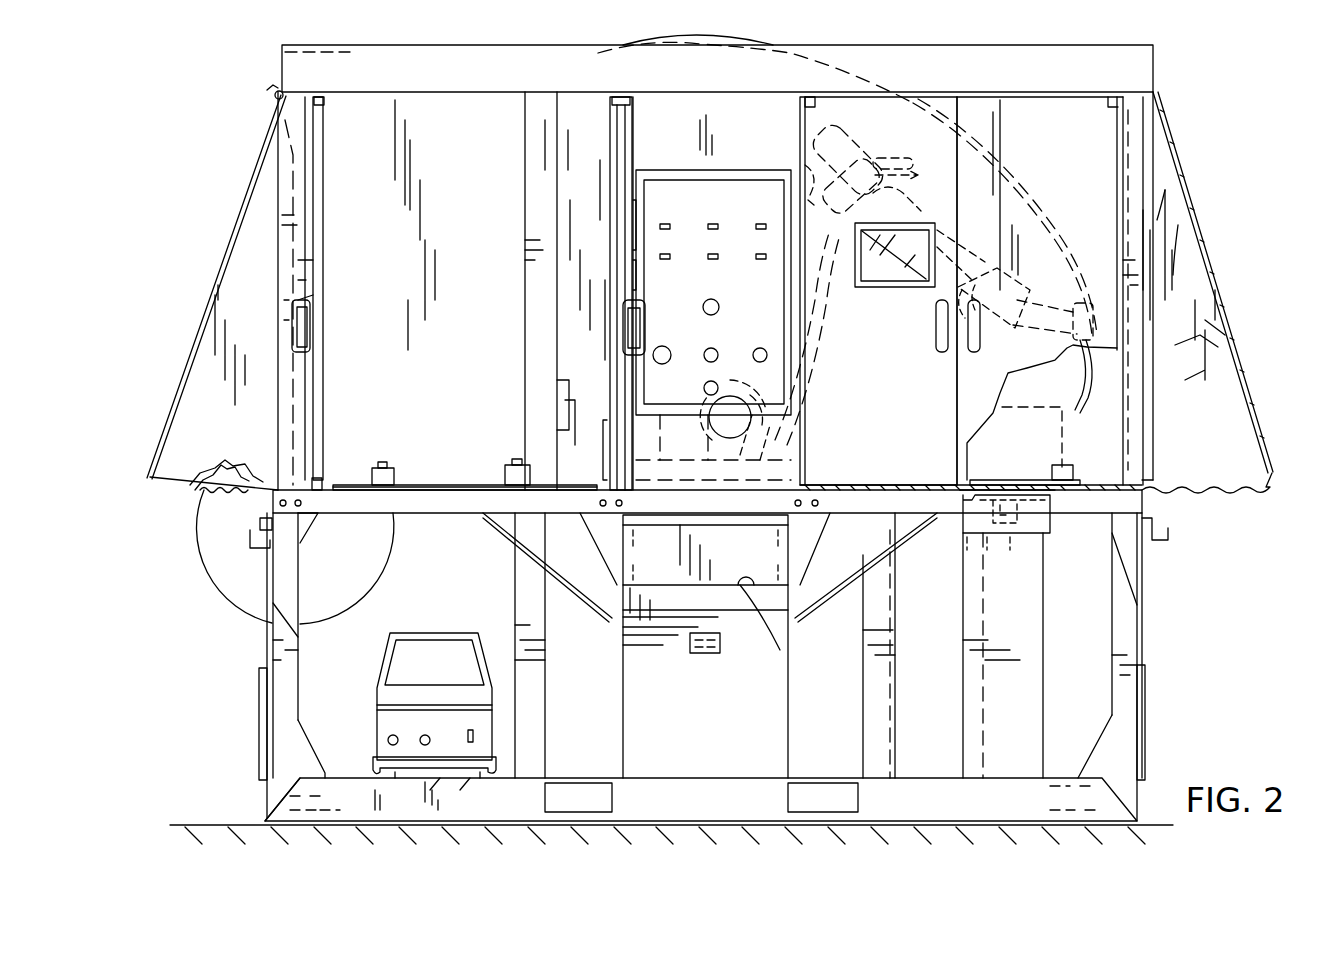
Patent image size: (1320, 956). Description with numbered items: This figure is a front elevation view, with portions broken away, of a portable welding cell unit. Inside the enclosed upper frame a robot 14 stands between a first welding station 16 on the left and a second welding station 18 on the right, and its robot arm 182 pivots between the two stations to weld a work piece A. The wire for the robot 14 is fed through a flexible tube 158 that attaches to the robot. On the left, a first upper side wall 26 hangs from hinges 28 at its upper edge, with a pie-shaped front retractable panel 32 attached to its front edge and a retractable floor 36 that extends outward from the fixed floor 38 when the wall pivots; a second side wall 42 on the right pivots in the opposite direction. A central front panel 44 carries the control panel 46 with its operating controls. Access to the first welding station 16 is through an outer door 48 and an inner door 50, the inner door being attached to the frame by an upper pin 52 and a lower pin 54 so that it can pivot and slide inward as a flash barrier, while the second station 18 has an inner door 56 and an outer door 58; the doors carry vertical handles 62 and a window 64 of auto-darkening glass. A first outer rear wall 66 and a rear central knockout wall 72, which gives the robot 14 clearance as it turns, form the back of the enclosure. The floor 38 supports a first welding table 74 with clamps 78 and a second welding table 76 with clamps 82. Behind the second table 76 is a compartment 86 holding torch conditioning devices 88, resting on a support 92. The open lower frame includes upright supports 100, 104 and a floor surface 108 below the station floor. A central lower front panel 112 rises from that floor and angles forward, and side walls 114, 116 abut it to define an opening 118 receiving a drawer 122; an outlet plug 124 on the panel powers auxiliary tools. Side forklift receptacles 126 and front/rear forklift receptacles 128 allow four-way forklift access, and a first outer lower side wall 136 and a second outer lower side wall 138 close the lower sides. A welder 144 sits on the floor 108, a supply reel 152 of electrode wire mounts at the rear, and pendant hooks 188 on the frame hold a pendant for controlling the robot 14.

The robot 14 is at (919, 195).
The first welding station 16 is at (362, 222).
The second welding station 18 is at (1113, 387).
The first upper side wall 26 is at (193, 337).
The hinges 28 is at (280, 90).
The front retractable panel 32 is at (195, 405).
The retractable floor 36 is at (212, 493).
The floor 38 is at (415, 488).
The second side wall 42 is at (1245, 400).
The central front panel 44 is at (750, 445).
The control panel 46 is at (725, 195).
The outer door 48 is at (322, 270).
The inner door 50 is at (620, 142).
The upper pin 52 is at (620, 95).
The lower pin 54 is at (612, 493).
The inner door 56 is at (910, 135).
The outer door 58 is at (1055, 125).
The handles 62 is at (297, 320).
The window 64 is at (640, 262).
The first outer rear wall 66 is at (465, 135).
The rear central knockout wall 72 is at (590, 110).
The first welding table 74 is at (455, 485).
The second welding table 76 is at (1085, 485).
The clamps 78 is at (375, 477).
The clamps 82 is at (1070, 465).
The compartment 86 is at (1050, 533).
The torch conditioning devices 88 is at (1013, 533).
The support 92 is at (1032, 628).
The upright support 100 is at (280, 696).
The upright support 104 is at (1128, 650).
The floor surface 108 is at (345, 778).
The central lower front panel 112 is at (640, 705).
The side wall 114 is at (633, 650).
The side wall 116 is at (775, 688).
The opening 118 is at (745, 585).
The drawer 122 is at (775, 545).
The outlet plug 124 is at (712, 653).
The side forklift receptacles 126 is at (1110, 795).
The front/rear forklift receptacles 128 is at (580, 790).
The first outer lower side wall 136 is at (262, 727).
The second outer lower side wall 138 is at (1145, 725).
The welder 144 is at (425, 633).
The supply reel 152 is at (230, 595).
The flexible tube 158 is at (700, 40).
The robot arm 182 is at (826, 330).
The pendant hooks 188 is at (248, 540).
The work piece A is at (1013, 407).